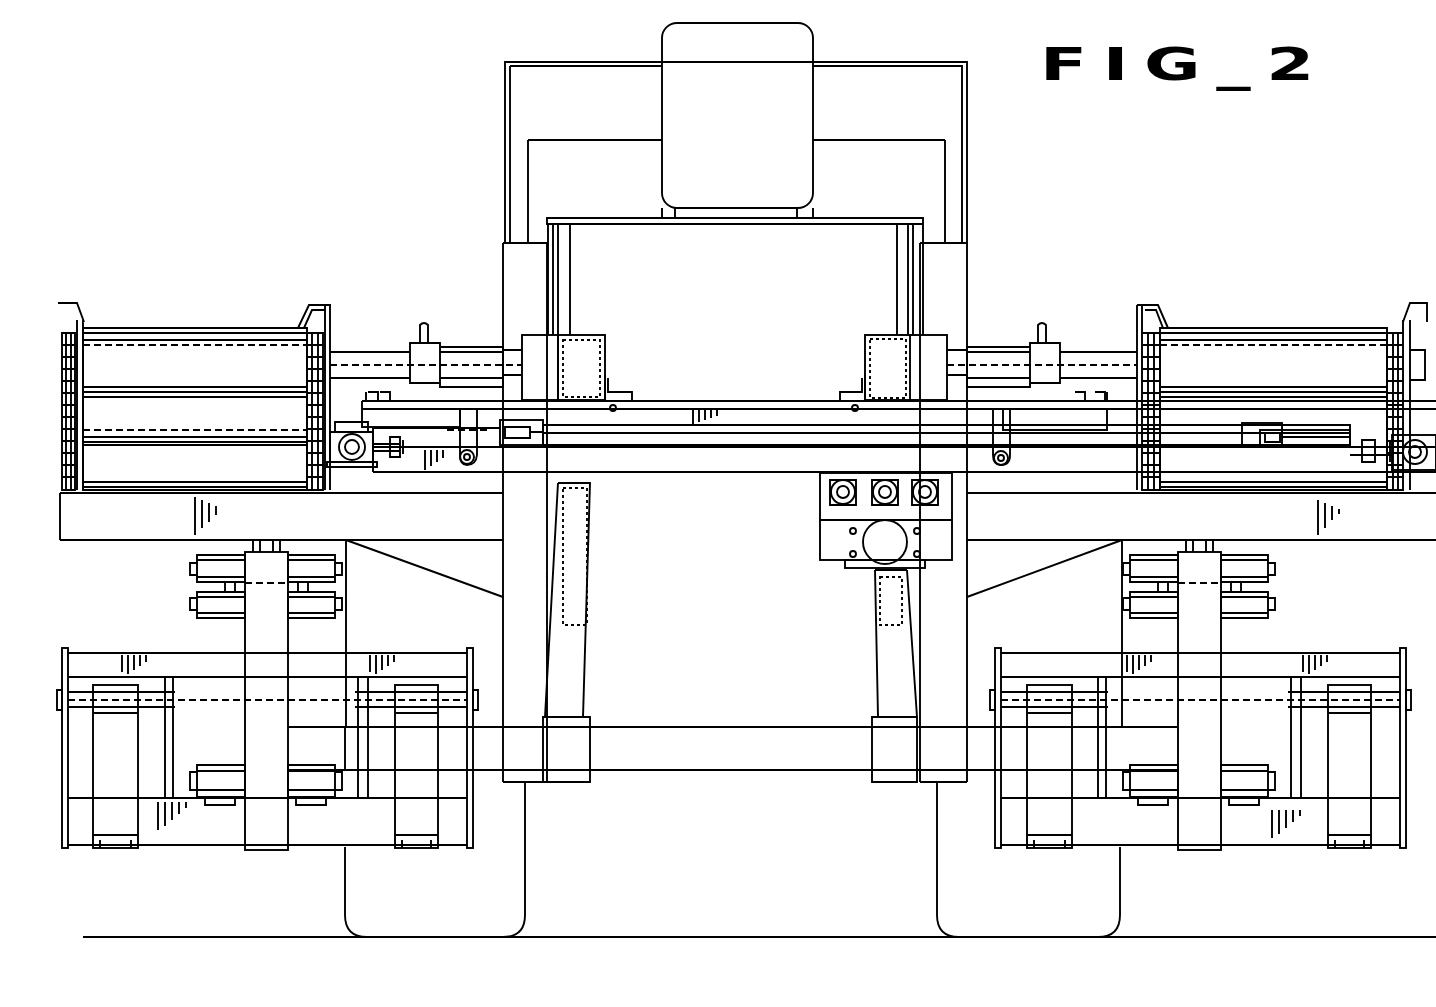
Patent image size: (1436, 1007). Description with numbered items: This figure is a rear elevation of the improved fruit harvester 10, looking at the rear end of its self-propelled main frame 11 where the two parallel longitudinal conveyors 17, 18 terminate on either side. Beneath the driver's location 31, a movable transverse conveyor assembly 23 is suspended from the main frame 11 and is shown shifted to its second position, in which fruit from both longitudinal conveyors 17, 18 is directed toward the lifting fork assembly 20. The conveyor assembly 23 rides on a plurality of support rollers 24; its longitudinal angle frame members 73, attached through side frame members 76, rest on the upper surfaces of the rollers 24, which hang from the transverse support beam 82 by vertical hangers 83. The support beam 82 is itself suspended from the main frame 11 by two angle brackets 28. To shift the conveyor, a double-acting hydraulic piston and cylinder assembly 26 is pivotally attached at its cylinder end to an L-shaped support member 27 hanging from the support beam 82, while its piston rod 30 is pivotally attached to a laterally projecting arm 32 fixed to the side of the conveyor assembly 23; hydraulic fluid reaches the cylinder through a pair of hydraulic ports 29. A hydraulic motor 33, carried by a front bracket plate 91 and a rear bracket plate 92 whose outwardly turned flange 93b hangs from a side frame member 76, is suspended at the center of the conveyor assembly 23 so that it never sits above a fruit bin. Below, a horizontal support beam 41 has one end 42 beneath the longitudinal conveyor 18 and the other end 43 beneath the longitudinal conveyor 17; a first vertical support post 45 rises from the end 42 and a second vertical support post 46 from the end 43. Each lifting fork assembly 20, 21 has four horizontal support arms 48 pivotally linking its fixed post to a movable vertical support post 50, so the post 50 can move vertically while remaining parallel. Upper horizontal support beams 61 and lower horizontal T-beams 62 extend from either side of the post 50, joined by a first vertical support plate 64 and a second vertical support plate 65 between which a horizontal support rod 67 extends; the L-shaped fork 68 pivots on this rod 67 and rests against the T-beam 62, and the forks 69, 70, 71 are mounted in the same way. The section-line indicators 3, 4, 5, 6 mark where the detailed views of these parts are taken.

The fruit harvester 10 is at (420, 108).
The main frame 11 is at (976, 265).
The longitudinal conveyor 17 is at (190, 330).
The longitudinal conveyor 18 is at (1273, 336).
The lifting fork assembly 20 is at (267, 693).
The lifting fork assembly 21 is at (1200, 681).
The transverse conveyor assembly 23 is at (1210, 420).
The support rollers 24 is at (468, 468).
The hydraulic piston and cylinder assembly 26 is at (731, 426).
The L-shaped support member 27 is at (515, 406).
The angle brackets 28 is at (610, 386).
The hydraulic ports 29 is at (556, 412).
The piston rod 30 is at (1175, 425).
The driver location 31 is at (816, 101).
The laterally projecting arm 32 is at (1330, 440).
The hydraulic motor 33 is at (900, 555).
The cross beam 41 is at (732, 737).
The end of horizontal support beam 42 is at (1156, 746).
The end of horizontal support beam 43 is at (315, 738).
The first vertical support post 45 is at (1207, 585).
The second vertical support post 46 is at (274, 585).
The horizontal support arms 48 is at (222, 584).
The movable vertical support post 50 is at (285, 632).
The upper horizontal support beams 61 is at (140, 660).
The lower horizontal T-beams 62 is at (232, 835).
The first vertical support plate 64 is at (66, 655).
The second vertical support plate 65 is at (170, 724).
The horizontal support rod 67 is at (172, 698).
The L-shaped fork 68 is at (130, 781).
The fork 69 is at (430, 777).
The fork 70 is at (1064, 781).
The fork 71 is at (1363, 777).
The longitudinal angle frame members 73 is at (1118, 447).
The side frame members 76 is at (1388, 437).
The transverse support beam 82 is at (668, 410).
The vertical hangers 83 is at (460, 416).
The front bracket plate 91 is at (820, 540).
The rear bracket plate 92 is at (820, 512).
The outwardly turned flange 93b is at (820, 476).
The section line 3 is at (118, 257).
The section line 4 is at (400, 308).
The section line 5 is at (395, 383).
The section line 6 is at (885, 345).